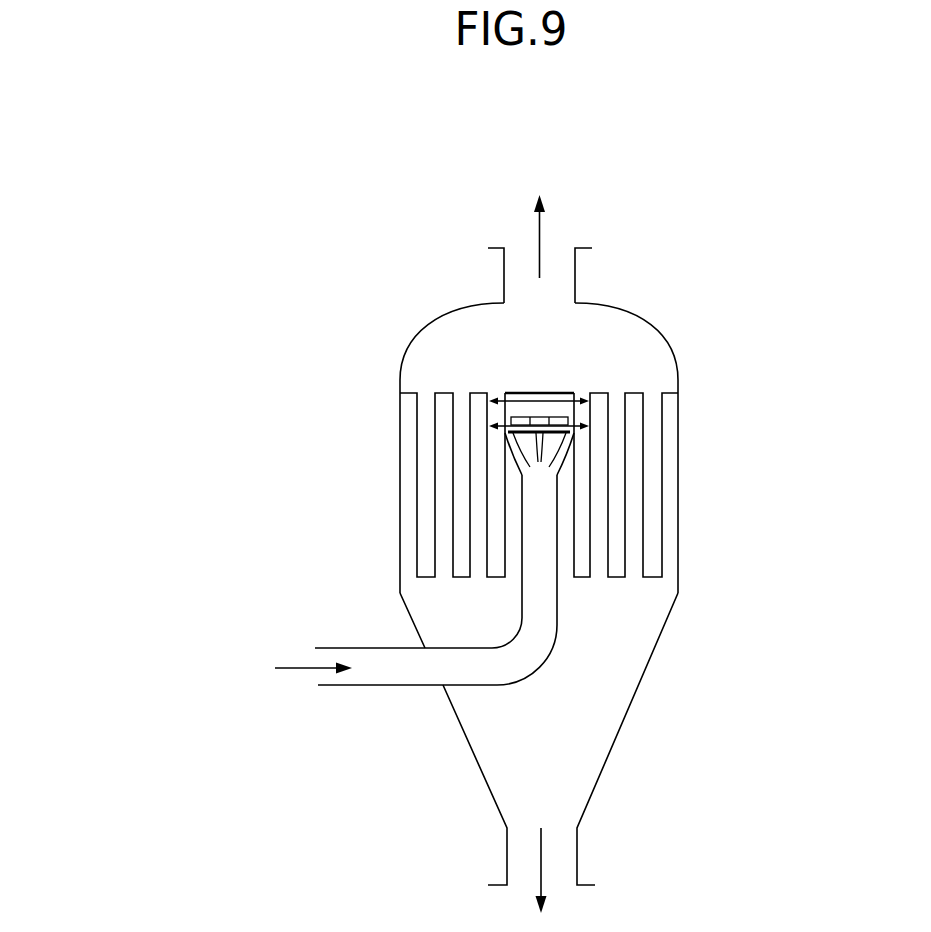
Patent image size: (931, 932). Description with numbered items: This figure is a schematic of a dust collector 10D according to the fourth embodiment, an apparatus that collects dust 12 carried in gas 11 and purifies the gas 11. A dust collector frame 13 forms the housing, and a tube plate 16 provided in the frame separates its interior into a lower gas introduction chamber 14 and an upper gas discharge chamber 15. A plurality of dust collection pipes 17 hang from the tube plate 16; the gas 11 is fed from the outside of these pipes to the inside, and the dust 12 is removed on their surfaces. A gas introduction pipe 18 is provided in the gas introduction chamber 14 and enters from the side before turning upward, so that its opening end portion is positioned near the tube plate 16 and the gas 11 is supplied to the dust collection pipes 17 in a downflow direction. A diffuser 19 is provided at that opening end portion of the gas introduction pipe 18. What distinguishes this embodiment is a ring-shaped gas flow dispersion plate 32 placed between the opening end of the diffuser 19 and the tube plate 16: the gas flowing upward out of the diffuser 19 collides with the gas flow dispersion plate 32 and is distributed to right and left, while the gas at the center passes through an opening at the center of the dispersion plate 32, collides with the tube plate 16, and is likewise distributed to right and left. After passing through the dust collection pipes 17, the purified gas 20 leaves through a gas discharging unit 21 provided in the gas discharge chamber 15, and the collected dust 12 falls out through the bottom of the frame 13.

The dust collector 10D is at (471, 200).
The gas 11 is at (287, 668).
The dust 12 is at (541, 887).
The dust collector frame 13 is at (678, 543).
The gas introduction chamber 14 is at (653, 640).
The gas discharge chamber 15 is at (646, 333).
The tube plate 16 is at (543, 393).
The dust collection pipes 17 is at (417, 452).
The gas introduction pipe 18 is at (547, 655).
The diffuser 19 is at (560, 445).
The purified gas 20 is at (540, 228).
The gas discharging unit 21 is at (575, 277).
The gas flow dispersion plate 32 is at (568, 421).